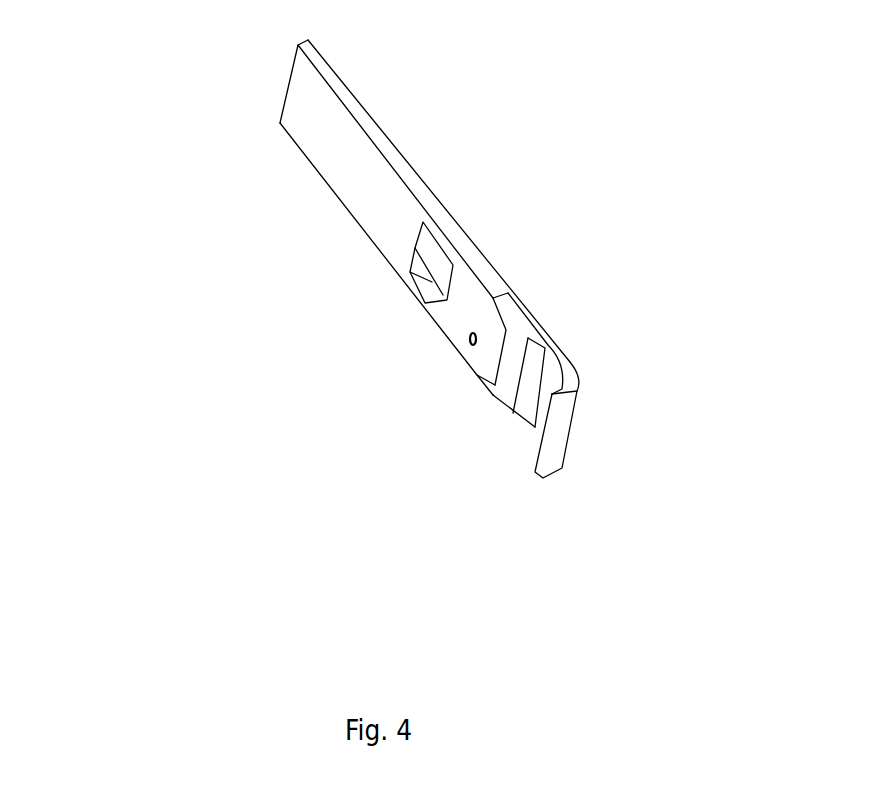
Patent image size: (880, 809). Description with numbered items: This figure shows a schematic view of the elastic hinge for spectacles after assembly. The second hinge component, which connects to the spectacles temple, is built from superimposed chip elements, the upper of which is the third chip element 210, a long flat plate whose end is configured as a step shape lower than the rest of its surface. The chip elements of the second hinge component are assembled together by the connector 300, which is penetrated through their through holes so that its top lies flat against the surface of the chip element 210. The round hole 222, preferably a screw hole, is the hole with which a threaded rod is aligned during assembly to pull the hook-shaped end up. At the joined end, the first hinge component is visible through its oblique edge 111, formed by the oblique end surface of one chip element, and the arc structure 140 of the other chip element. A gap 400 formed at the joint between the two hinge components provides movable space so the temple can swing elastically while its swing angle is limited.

The third chip element 210 is at (305, 103).
The connector 300 is at (432, 282).
The round hole 222 is at (468, 339).
The oblique edge 111 is at (530, 407).
The gap 400 is at (535, 317).
The arc structure 140 is at (558, 460).